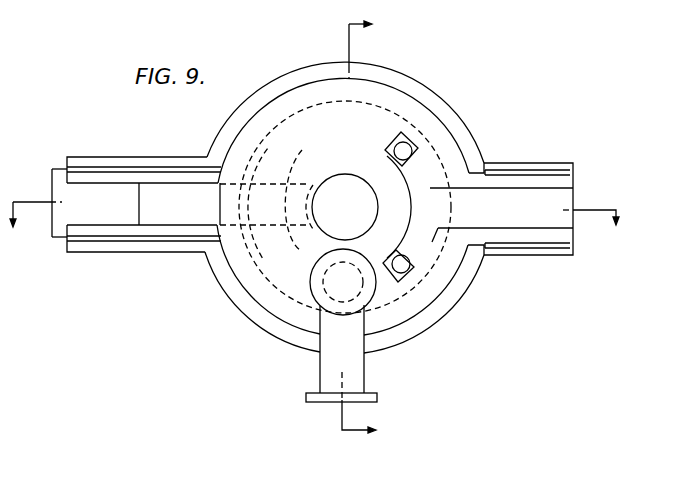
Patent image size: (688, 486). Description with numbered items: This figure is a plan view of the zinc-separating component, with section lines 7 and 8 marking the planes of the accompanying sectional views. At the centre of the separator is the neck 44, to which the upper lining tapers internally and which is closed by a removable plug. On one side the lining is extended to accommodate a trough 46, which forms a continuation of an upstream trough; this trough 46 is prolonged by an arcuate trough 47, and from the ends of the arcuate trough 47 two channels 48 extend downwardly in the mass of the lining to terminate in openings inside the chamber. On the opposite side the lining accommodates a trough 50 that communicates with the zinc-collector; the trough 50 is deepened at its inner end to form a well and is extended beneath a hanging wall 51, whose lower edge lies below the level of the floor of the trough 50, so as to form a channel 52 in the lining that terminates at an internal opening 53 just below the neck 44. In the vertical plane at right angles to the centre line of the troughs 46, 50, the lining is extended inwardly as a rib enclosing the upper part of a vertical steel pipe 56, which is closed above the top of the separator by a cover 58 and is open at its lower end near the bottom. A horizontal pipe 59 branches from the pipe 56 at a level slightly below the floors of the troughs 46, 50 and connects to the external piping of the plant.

The section line 7- 7 is at (314, 221).
The section line 8- 8 is at (351, 230).
The neck 44 is at (343, 173).
The trough 46 is at (523, 202).
The arcuate trough 47 is at (430, 187).
The channels 48 is at (412, 150).
The trough 50 is at (83, 192).
The hanging wall 51 is at (153, 195).
The channel 52 is at (221, 211).
The internal opening 53 is at (311, 153).
The vertical steel pipe 56 is at (337, 262).
The cover 58 is at (322, 283).
The horizontal pipe 59 is at (322, 380).